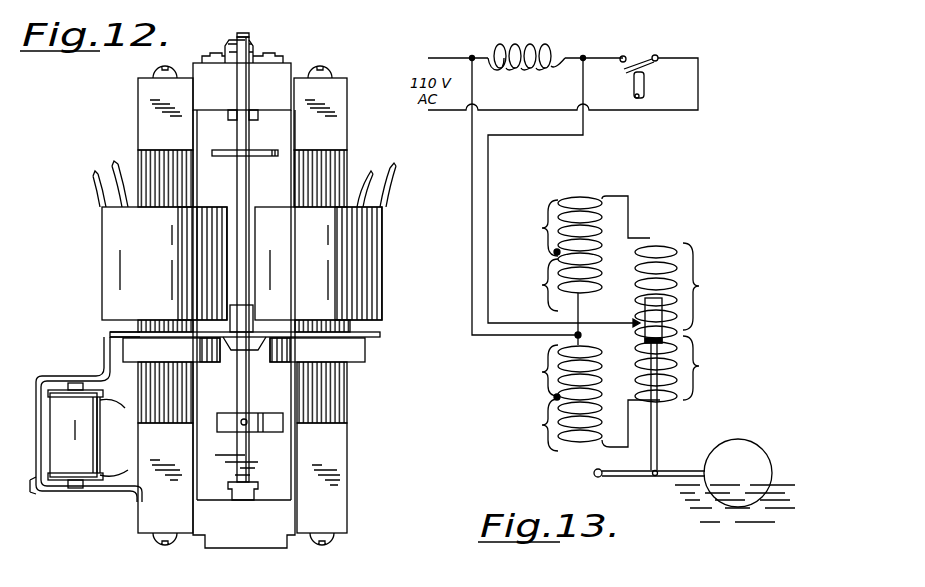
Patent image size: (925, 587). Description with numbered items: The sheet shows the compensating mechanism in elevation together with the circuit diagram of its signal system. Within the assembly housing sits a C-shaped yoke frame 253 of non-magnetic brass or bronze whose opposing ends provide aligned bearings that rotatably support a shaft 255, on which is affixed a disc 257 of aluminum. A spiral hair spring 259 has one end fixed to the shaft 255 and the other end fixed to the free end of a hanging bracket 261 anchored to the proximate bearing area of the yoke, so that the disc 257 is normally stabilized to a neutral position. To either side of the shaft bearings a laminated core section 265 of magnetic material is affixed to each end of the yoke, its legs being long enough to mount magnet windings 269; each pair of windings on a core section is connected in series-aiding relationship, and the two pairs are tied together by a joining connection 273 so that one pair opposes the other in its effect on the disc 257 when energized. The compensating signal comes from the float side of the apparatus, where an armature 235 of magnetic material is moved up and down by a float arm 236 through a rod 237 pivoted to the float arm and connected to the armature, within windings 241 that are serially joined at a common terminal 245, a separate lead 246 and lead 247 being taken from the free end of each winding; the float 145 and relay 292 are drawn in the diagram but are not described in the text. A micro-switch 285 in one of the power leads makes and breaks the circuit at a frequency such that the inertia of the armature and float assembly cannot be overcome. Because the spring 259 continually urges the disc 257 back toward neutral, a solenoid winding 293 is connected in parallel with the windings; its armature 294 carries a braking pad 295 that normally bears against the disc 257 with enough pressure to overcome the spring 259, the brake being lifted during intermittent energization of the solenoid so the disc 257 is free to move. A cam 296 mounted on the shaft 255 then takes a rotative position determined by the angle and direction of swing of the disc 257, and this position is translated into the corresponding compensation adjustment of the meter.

In FIG. 13, the float 145 is at (746, 453).
In FIG. 13, the armature 235 is at (665, 318).
In FIG. 13, the float arm 236 is at (631, 478).
In FIG. 13, the rod 237 is at (658, 420).
In FIG. 13, the windings 241 is at (700, 290).
In FIG. 13, the common terminal 245 is at (603, 308).
In FIG. 13, the lead 246 is at (606, 195).
In FIG. 13, the lead 247 is at (607, 448).
In FIG. 12, the C-shaped yoke frame 253 is at (290, 104).
In FIG. 12, the shaft 255 is at (249, 183).
In FIG. 12, the disc 257 is at (381, 340).
In FIG. 12, the spiral hair spring 259 is at (226, 149).
In FIG. 12, the hanging bracket 261 is at (238, 86).
In FIG. 12, the laminated core section 265 is at (140, 157).
In FIG. 12, the magnet windings 269 is at (120, 242).
In FIG. 13, the magnet windings 269 is at (540, 229).
In FIG. 13, the joining connection 273 is at (581, 338).
In FIG. 13, the micro-switch 285 is at (641, 62).
In FIG. 13, the relay 292 is at (645, 88).
In FIG. 12, the solenoid winding 293 is at (47, 488).
In FIG. 13, the solenoid winding 293 is at (518, 53).
In FIG. 12, the armature 294 is at (41, 438).
In FIG. 12, the braking pad 295 is at (110, 333).
In FIG. 12, the cam 296 is at (262, 432).